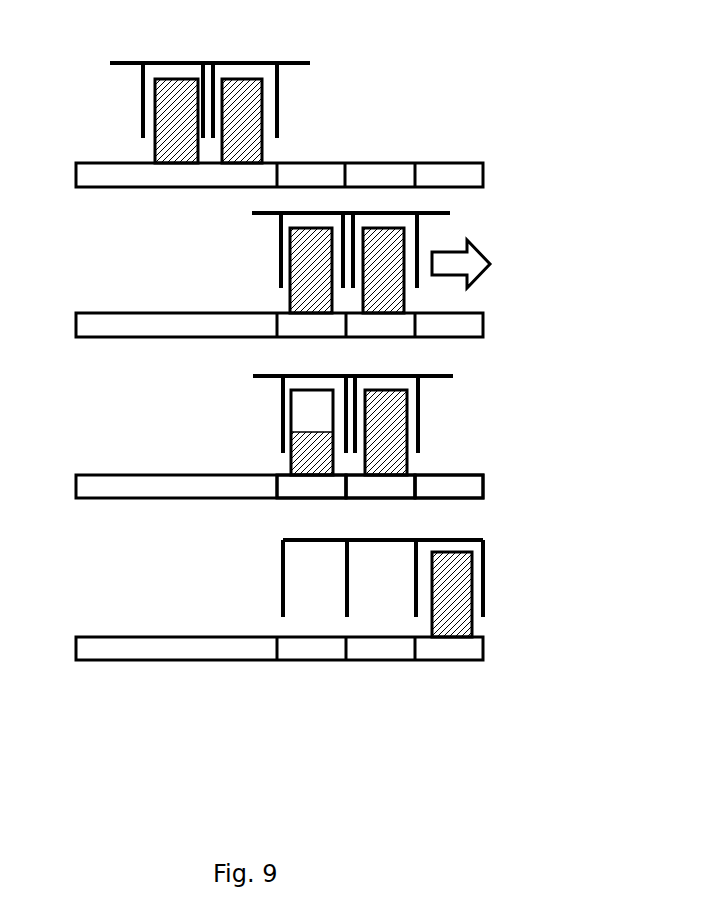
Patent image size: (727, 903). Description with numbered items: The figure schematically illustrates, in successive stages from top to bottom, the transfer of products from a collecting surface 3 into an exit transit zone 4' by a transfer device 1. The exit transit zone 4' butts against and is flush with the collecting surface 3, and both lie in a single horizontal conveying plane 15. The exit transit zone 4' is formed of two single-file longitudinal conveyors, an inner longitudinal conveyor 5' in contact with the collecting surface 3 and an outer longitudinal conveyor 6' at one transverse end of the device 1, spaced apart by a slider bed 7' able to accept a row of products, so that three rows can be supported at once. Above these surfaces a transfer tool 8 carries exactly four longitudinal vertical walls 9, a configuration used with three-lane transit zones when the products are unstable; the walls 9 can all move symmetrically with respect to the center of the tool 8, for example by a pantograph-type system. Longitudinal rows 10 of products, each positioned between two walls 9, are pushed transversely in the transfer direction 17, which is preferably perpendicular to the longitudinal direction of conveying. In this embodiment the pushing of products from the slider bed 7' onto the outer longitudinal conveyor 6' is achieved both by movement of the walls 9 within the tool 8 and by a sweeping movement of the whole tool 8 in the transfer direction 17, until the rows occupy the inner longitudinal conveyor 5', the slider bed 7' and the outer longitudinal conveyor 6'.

The transfer device 1 is at (446, 74).
The longitudinal vertical walls 9 is at (127, 103).
The transfer direction 17 is at (498, 230).
The transfer tool 8 is at (282, 361).
The conveying plane 15 is at (102, 441).
The longitudinal rows of products 10 is at (403, 435).
The inner longitudinal conveyor 5' is at (285, 510).
The slider bed 7' is at (329, 534).
The outer longitudinal conveyor 6' is at (496, 510).
The collecting surface 3 is at (136, 622).
The exit transit zone 4' is at (375, 633).